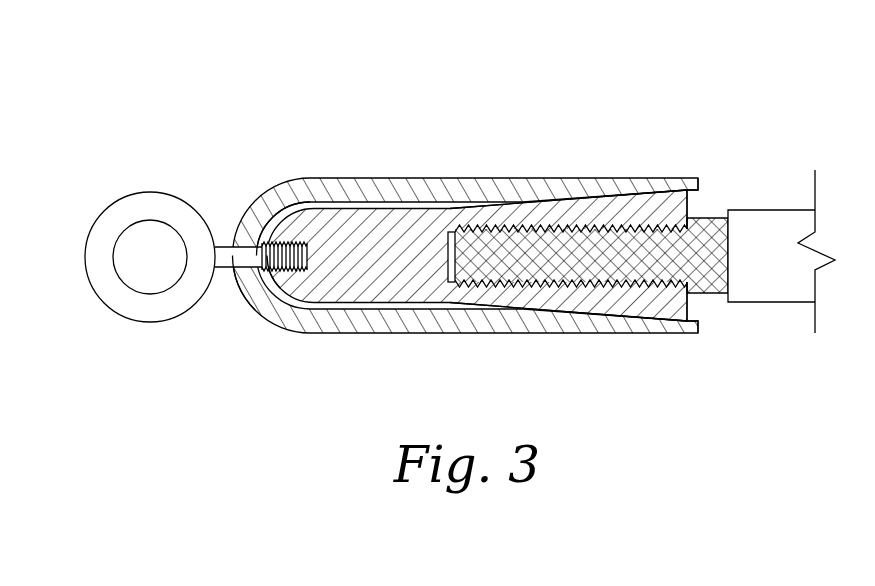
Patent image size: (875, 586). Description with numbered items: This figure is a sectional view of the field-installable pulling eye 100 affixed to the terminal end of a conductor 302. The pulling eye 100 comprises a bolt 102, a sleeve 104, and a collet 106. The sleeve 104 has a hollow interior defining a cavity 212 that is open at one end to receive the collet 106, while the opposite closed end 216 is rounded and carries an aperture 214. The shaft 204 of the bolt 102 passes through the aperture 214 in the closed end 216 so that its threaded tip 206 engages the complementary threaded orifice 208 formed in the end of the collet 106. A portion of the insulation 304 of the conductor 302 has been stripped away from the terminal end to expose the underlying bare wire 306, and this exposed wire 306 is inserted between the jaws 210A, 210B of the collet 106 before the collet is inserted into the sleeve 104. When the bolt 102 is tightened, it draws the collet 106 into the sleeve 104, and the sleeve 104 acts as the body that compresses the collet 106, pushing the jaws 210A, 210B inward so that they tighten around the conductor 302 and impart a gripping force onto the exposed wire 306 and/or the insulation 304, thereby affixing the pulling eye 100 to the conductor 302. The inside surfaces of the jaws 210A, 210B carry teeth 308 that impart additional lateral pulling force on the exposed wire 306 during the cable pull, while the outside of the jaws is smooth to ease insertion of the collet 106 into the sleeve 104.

The field-installable pulling eye 100 is at (497, 84).
The bolt 102 is at (155, 207).
The sleeve 104 is at (405, 192).
The collet 106 is at (392, 275).
The shaft 204 is at (226, 248).
The threaded tip 206 is at (272, 228).
The threaded orifice 208 is at (287, 273).
The jaw 210A is at (590, 213).
The jaw 210B is at (592, 295).
The cavity 212 is at (690, 198).
The aperture 214 is at (243, 288).
The closed end 216 is at (268, 313).
The conductor 302 is at (759, 184).
The insulation 304 is at (752, 268).
The wire 306 is at (711, 300).
The teeth 308 is at (515, 254).